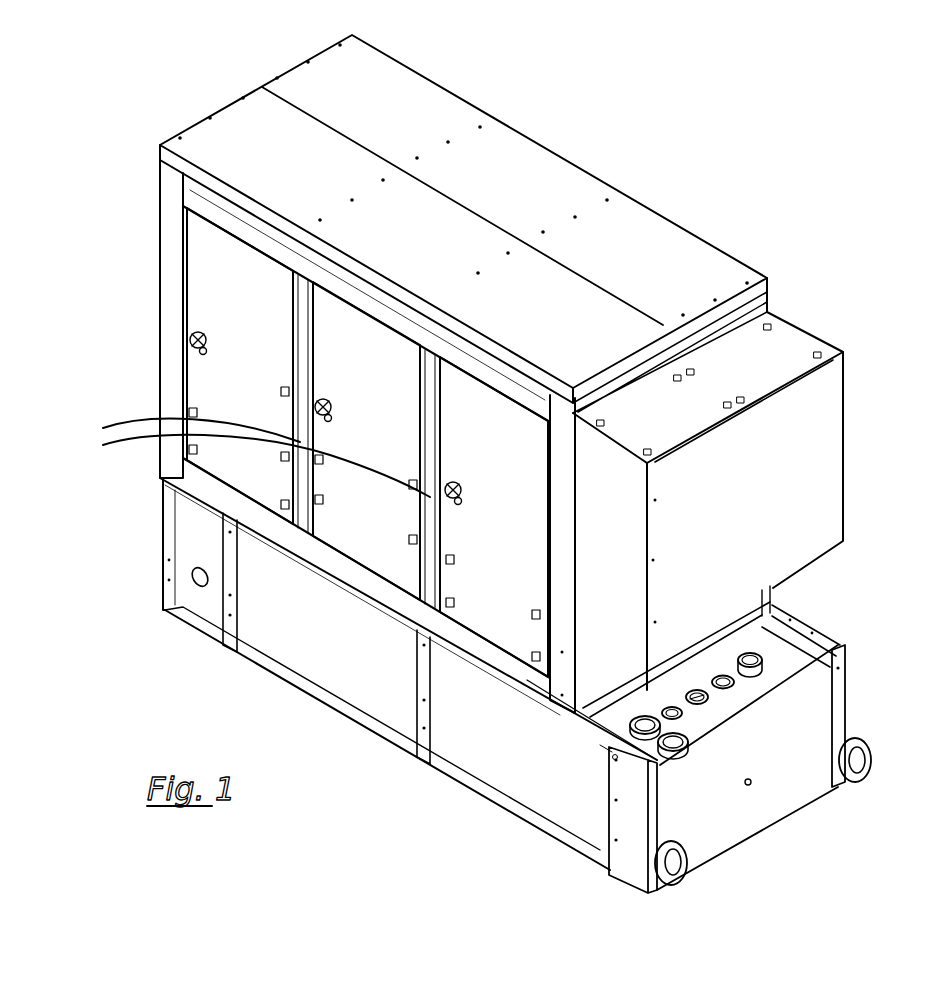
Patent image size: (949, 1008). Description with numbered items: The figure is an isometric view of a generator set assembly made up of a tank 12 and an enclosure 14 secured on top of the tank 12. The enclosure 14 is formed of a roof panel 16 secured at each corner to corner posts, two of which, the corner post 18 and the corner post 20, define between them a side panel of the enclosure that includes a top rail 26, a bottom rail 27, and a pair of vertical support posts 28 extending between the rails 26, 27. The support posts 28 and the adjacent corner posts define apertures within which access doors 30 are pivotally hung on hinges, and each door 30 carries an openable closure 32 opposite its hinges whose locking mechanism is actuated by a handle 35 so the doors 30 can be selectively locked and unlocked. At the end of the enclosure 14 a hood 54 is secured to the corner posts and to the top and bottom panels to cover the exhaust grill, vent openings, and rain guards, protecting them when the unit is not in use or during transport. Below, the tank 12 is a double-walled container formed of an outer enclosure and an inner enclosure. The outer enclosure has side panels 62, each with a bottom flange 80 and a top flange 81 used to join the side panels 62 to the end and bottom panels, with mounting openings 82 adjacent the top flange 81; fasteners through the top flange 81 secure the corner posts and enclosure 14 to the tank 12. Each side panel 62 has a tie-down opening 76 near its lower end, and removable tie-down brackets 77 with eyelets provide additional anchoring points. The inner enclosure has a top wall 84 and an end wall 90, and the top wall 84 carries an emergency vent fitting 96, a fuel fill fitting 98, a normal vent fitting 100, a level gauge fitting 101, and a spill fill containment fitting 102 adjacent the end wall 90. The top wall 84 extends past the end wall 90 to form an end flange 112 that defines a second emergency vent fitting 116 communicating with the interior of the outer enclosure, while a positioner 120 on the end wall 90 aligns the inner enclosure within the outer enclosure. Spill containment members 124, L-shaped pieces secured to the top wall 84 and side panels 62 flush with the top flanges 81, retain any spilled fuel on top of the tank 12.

The tank 12 is at (253, 697).
The enclosure 14 is at (749, 227).
The roof panel 16 is at (327, 122).
The corner post 18 is at (570, 697).
The corner post 20 is at (157, 251).
The top rail 26 is at (240, 247).
The bottom rail 27 is at (206, 486).
The vertical support posts 28 is at (245, 458).
The access doors 30 is at (258, 336).
The openable closure 32 is at (205, 354).
The handle 35 is at (199, 331).
The hood 54 is at (851, 399).
The side panels 62 is at (337, 657).
The tie-down opening 76 is at (194, 590).
The tie-down brackets 77 is at (690, 877).
The bottom flange 80 is at (572, 845).
The top flange 81 is at (640, 757).
The mounting openings 82 is at (803, 617).
The top wall 84 is at (788, 654).
The end wall 90 is at (738, 827).
The emergency vent fitting 96 is at (624, 736).
The fuel fill fitting 98 is at (733, 689).
The normal vent fitting 100 is at (686, 721).
The level gauge fitting 101 is at (712, 712).
The spill fill containment fitting 102 is at (763, 663).
The end flange 112 is at (803, 683).
The second emergency vent fitting 116 is at (683, 752).
The positioner 120 is at (752, 785).
The spill containment members 124 is at (608, 745).